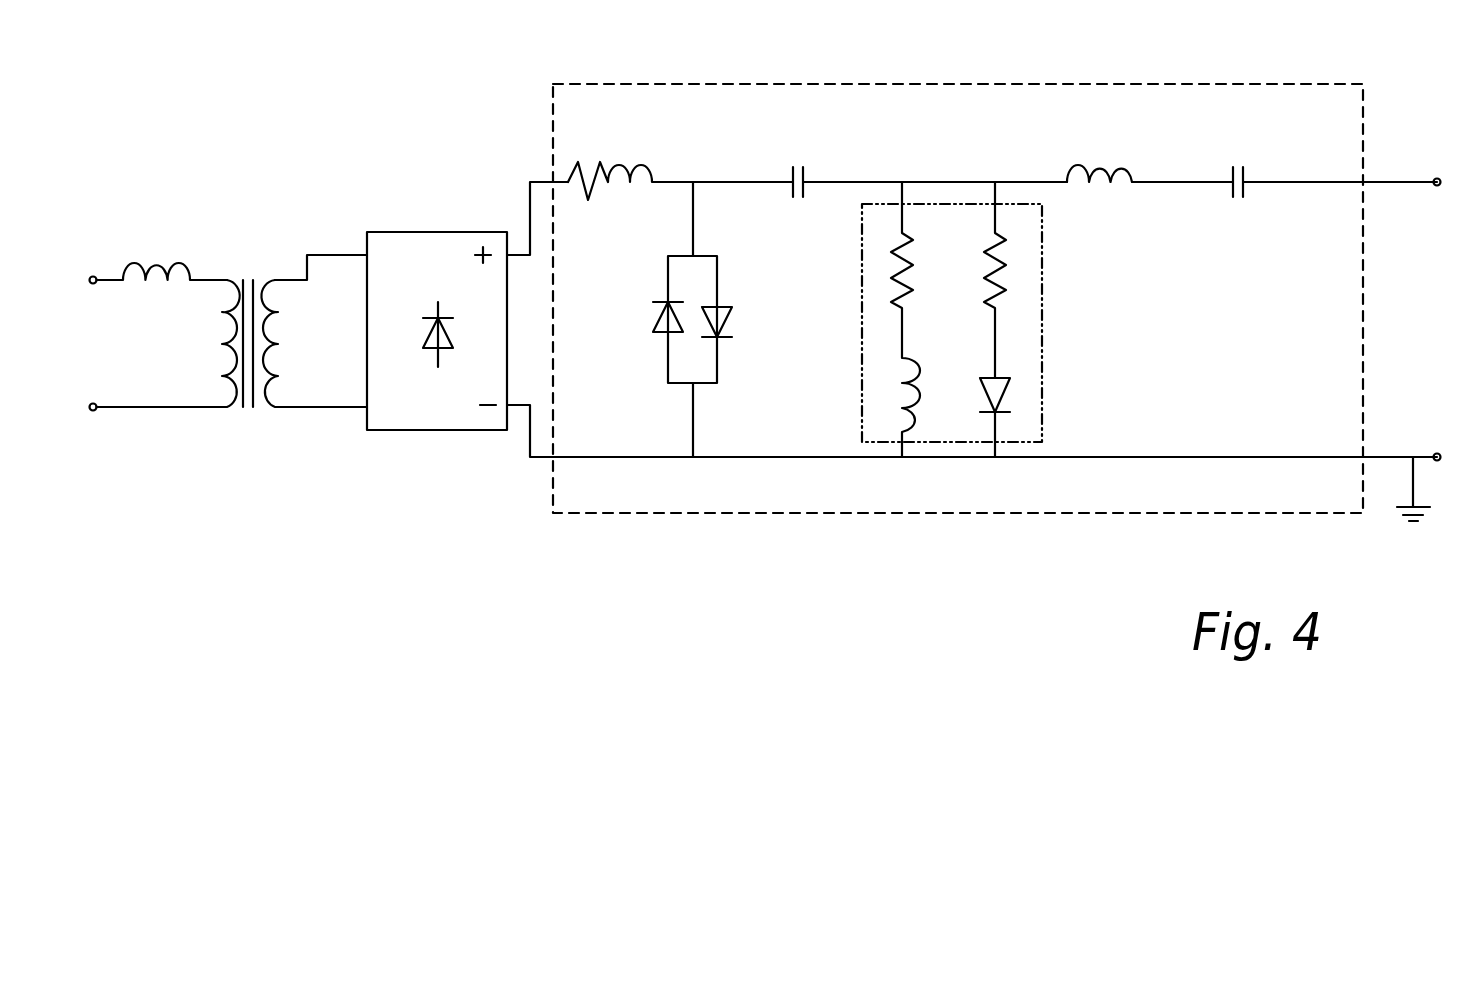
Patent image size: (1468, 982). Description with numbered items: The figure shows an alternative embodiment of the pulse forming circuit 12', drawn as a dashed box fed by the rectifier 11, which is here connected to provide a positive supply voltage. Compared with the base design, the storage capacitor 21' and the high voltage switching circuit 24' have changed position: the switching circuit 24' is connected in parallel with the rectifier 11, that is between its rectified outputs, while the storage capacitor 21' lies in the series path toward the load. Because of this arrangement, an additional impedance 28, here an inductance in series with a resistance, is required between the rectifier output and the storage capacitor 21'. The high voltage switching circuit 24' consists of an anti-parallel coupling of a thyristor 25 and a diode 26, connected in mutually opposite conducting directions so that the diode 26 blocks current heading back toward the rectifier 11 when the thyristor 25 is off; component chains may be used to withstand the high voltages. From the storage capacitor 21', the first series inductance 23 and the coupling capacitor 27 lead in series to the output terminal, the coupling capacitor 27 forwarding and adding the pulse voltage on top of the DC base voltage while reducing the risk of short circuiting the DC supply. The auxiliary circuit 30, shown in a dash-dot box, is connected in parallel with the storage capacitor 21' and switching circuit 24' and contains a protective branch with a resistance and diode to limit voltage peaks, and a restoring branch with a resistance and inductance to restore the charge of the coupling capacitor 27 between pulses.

The second rectifier circuit 11 is at (440, 232).
The pulse forming circuit 12' is at (1001, 298).
The storage capacitor 21' is at (930, 117).
The first series inductance 23 is at (1112, 182).
The high voltage switching circuit 24' is at (694, 319).
The thyristor 25 is at (730, 327).
The diode 26 is at (668, 362).
The coupling capacitor 27 is at (1243, 185).
The additional impedance 28 is at (633, 140).
The auxiliary circuit 30 is at (1042, 318).